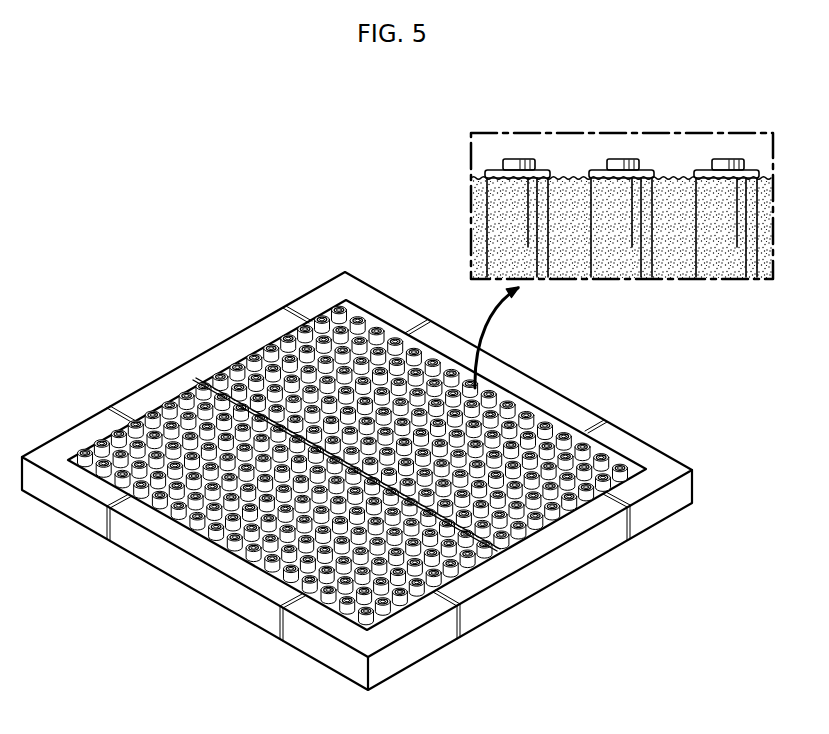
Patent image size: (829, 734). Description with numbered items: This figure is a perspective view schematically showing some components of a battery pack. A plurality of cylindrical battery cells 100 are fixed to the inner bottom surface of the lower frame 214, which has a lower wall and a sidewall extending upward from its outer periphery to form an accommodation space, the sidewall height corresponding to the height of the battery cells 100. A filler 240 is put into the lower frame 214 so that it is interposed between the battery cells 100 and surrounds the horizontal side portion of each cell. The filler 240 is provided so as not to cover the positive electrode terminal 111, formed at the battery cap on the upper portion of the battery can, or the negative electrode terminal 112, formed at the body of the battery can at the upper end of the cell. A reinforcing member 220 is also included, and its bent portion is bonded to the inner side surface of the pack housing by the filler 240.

The battery cell 100 is at (648, 158).
The positive electrode terminal 111 is at (515, 162).
The negative electrode terminal 112 is at (541, 170).
The lower frame 214 is at (174, 358).
The reinforcing member 220 is at (205, 381).
The filler 240 is at (476, 217).